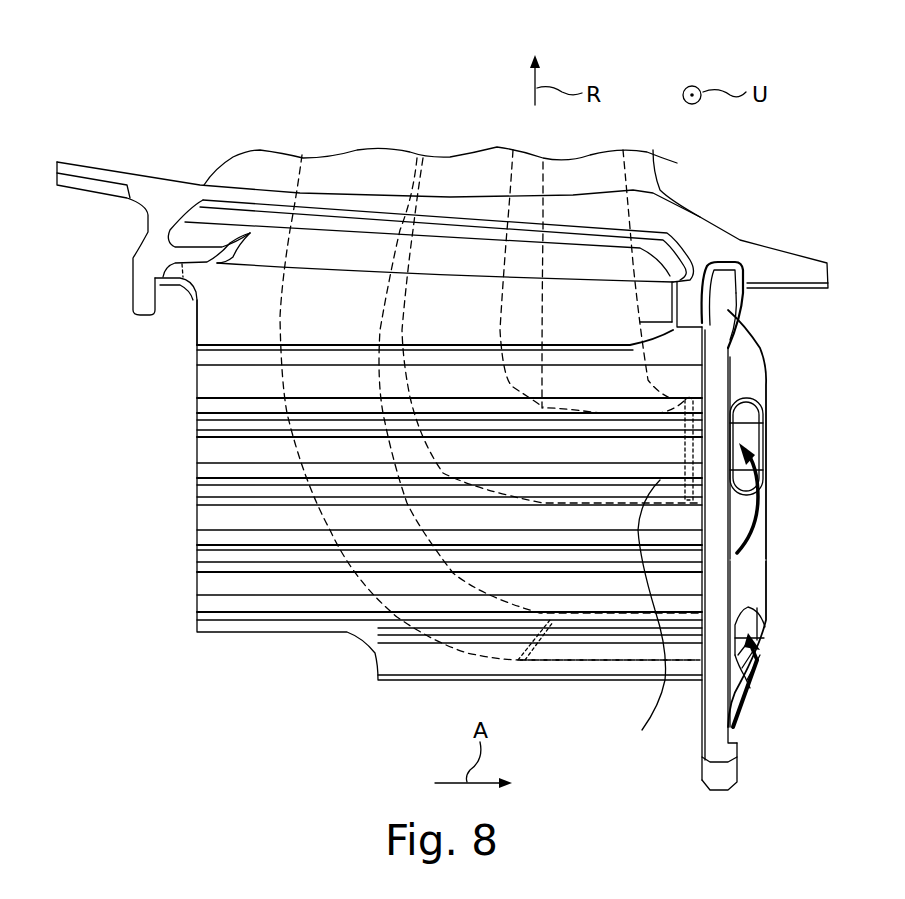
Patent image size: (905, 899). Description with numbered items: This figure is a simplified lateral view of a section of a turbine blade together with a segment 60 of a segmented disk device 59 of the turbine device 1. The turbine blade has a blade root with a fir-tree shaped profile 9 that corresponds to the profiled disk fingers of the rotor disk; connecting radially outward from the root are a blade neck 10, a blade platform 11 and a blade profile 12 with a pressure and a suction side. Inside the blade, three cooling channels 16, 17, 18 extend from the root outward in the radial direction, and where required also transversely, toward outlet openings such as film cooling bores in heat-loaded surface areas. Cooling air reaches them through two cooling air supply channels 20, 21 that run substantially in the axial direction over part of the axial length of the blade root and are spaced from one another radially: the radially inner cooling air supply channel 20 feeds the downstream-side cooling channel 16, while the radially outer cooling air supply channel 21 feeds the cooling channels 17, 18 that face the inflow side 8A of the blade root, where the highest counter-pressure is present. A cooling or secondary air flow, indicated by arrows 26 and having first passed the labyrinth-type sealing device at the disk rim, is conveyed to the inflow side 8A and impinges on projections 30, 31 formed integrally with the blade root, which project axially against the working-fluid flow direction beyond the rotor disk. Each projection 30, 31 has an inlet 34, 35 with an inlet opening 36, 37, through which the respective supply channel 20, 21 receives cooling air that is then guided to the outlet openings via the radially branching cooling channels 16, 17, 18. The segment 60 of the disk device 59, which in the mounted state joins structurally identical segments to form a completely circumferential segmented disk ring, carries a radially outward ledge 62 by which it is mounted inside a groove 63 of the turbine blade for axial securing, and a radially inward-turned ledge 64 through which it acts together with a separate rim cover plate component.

The turbine device 1 is at (152, 84).
The inflow side of the blade root 8A is at (716, 340).
The fir-tree shaped profile 9 is at (213, 603).
The blade neck 10 is at (208, 305).
The blade platform 11 is at (73, 182).
The blade profile 12 is at (275, 164).
The cooling channel 16 is at (280, 313).
The cooling channel 17 is at (397, 367).
The cooling channel 18 is at (707, 323).
The radially inner cooling air supply channel 20 is at (562, 650).
The radially outer cooling air supply channel 21 is at (647, 617).
The cooling air flow 26 is at (767, 505).
The projection 30 is at (763, 612).
The projection 31 is at (766, 413).
The inlet 34 is at (771, 600).
The inlet 35 is at (773, 395).
The inlet opening 36 is at (764, 626).
The inlet opening 37 is at (762, 438).
The disk device 59 is at (778, 532).
The segment 60 is at (760, 555).
The ledge 62 is at (737, 297).
The groove 63 is at (732, 267).
The ledge 64 is at (712, 747).